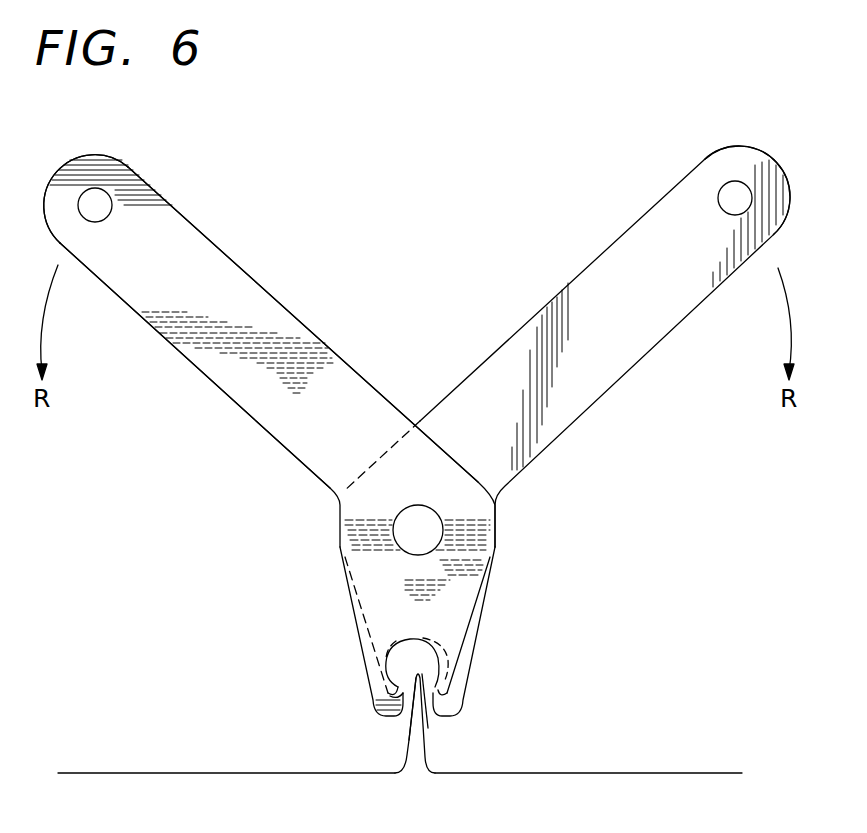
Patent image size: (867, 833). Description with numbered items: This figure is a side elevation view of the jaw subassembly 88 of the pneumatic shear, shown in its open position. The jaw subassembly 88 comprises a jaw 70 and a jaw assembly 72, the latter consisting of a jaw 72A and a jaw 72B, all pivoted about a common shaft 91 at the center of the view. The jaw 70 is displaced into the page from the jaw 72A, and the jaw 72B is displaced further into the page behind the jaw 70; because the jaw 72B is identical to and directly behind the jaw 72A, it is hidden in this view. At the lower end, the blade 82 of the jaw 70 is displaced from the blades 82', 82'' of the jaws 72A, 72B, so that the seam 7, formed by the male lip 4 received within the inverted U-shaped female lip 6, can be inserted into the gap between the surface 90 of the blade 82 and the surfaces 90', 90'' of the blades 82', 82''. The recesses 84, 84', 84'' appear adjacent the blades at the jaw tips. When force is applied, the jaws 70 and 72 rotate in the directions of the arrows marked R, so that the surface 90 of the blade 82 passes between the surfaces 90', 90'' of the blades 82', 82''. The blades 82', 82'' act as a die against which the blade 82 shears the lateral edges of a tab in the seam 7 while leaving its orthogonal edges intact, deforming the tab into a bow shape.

The jaw subassembly 88 is at (257, 184).
The jaw 70 is at (665, 334).
The jaw assembly 72 is at (238, 464).
The jaw 72A is at (200, 370).
The jaw 72B is at (222, 392).
The common shaft 91 is at (443, 524).
The recess 84 is at (471, 644).
The recess of first plate 84' is at (324, 636).
The recess of second plate 84'' is at (391, 650).
The surface 90 is at (492, 682).
The surface 90' is at (299, 673).
The surface 90'' is at (396, 695).
The blade 82 is at (485, 640).
The blade 82' is at (305, 633).
The blade 82'' is at (366, 625).
The female lip 6 is at (408, 742).
The male lip 4 is at (421, 740).
The seam 7 is at (415, 773).